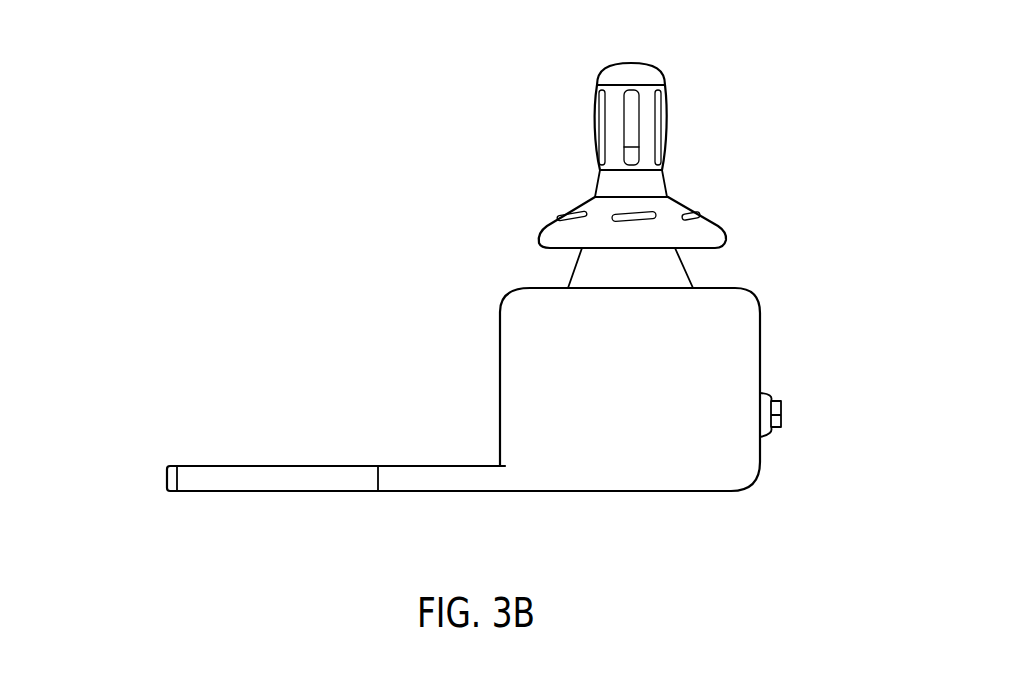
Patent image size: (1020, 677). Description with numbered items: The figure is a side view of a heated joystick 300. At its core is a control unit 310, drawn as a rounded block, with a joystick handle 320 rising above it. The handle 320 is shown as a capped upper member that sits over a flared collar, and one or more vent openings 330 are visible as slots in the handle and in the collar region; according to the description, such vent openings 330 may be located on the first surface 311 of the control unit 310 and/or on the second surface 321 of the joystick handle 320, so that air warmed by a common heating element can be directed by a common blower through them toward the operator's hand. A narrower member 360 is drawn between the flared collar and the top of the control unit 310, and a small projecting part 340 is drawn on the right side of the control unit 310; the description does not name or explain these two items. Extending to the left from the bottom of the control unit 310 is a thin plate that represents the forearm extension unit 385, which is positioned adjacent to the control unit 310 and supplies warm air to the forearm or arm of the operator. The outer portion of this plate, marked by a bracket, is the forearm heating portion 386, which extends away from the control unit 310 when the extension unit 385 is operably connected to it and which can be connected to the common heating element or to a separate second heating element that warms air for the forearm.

The joystick 300 is at (200, 173).
The control unit 310 is at (735, 474).
The first surface 311 is at (727, 289).
The joystick handle 320 is at (646, 119).
The second surface 321 is at (708, 217).
The vent openings 330 is at (640, 119).
The connector port 340 is at (783, 415).
The neck 360 is at (588, 270).
The forearm extension unit 385 is at (442, 478).
The forearm heating portion 386 is at (374, 452).